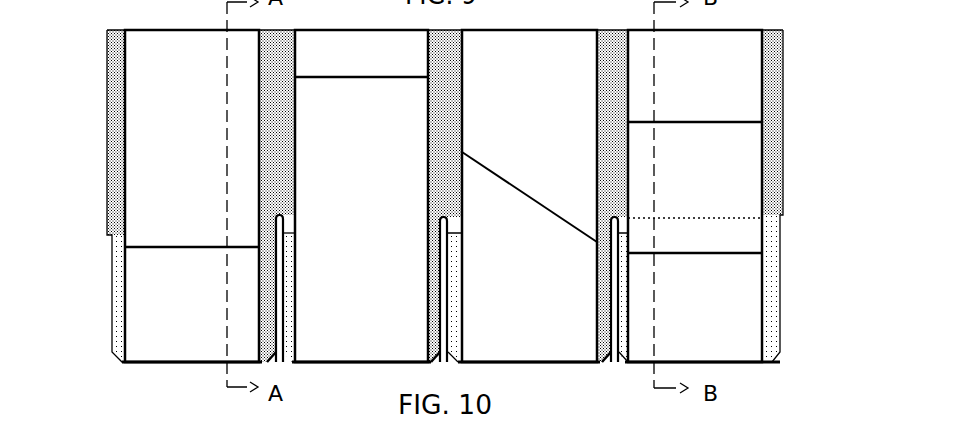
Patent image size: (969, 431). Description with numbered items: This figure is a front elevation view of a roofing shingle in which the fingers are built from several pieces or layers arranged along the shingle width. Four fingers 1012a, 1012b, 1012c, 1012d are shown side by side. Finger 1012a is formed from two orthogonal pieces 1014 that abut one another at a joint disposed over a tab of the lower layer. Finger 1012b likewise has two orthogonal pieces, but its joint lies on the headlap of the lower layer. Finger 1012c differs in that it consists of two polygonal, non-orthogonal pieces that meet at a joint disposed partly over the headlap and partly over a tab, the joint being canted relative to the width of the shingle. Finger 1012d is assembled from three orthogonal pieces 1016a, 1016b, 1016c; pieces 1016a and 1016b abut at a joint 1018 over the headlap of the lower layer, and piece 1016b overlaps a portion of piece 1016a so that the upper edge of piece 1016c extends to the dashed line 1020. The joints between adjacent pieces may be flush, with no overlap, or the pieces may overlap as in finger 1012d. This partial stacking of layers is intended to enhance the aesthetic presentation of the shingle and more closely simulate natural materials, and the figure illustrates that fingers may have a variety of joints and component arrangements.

The finger 1012a is at (215, 160).
The finger 1012b is at (143, 288).
The finger 1012c is at (562, 160).
The finger 1012d is at (737, 184).
The orthogonal pieces 1014 is at (150, 246).
The orthogonal piece 1016a is at (742, 79).
The orthogonal piece 1016b is at (745, 183).
The orthogonal piece 1016c is at (745, 313).
The joint 1018 is at (739, 122).
The dashed line 1020 is at (745, 219).